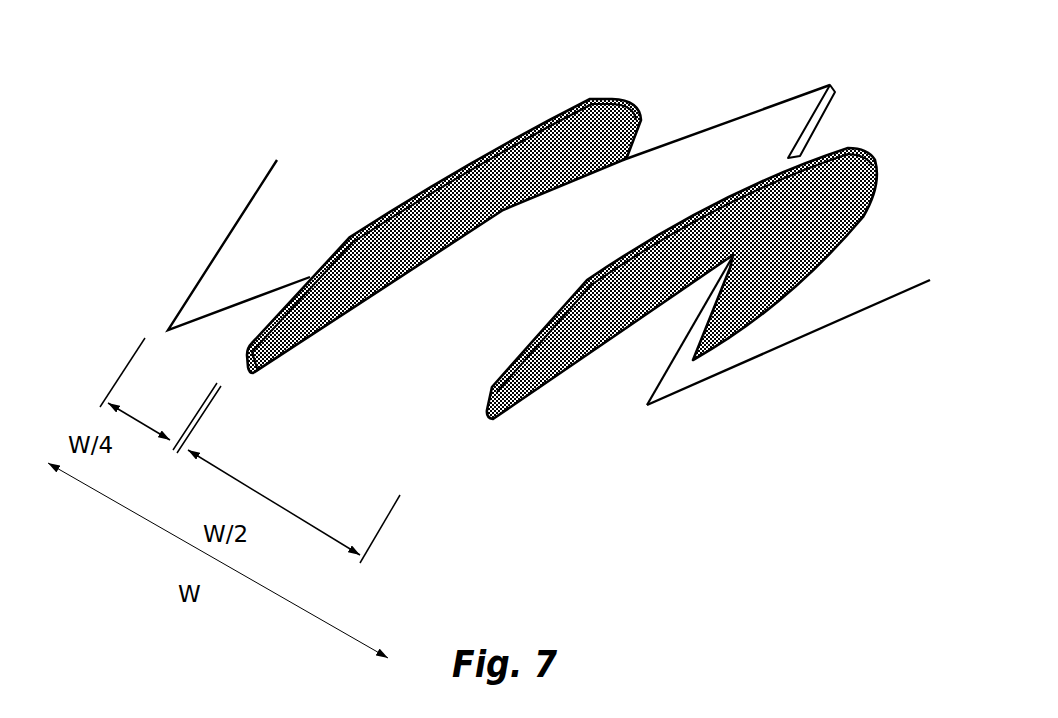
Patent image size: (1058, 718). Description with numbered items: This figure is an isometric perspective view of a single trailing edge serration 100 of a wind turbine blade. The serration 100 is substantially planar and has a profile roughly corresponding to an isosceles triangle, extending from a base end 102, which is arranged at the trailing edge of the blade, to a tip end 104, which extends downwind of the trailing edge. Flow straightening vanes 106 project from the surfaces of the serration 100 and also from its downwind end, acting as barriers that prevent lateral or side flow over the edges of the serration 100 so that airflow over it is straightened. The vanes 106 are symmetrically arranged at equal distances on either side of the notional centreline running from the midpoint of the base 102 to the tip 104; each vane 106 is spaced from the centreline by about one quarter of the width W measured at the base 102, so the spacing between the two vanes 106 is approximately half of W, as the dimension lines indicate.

The serration 100 is at (681, 168).
The base end 102 is at (585, 442).
The tip end 104 is at (845, 73).
The flow straightening vane 106 is at (555, 108).